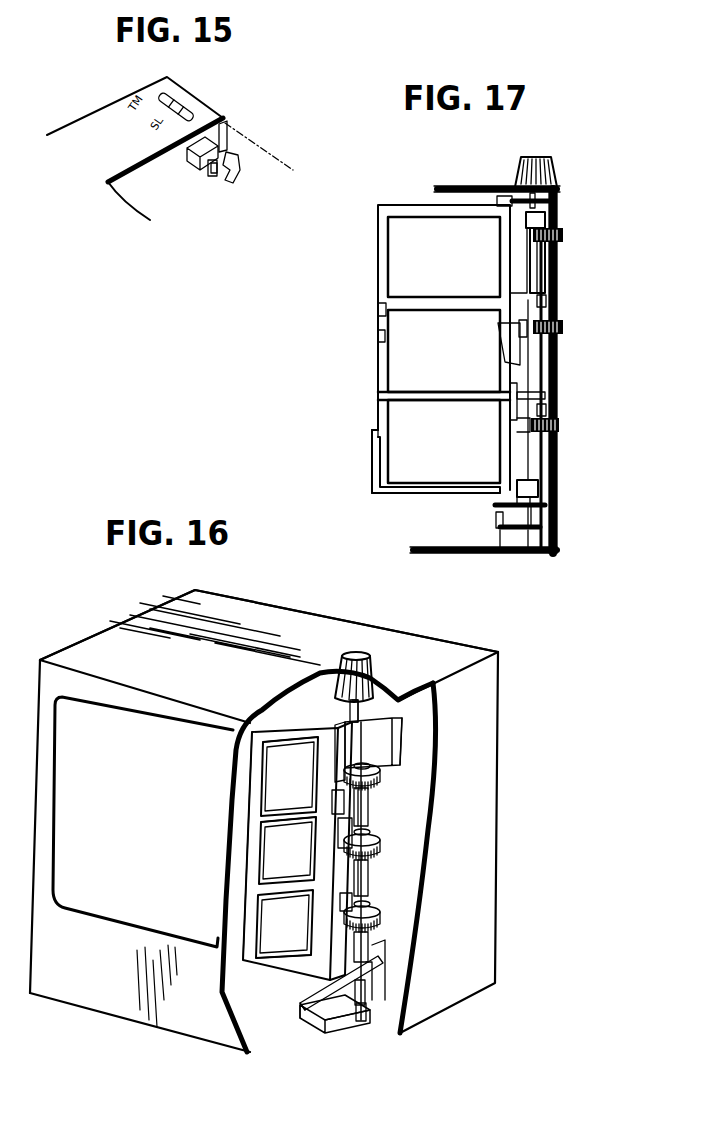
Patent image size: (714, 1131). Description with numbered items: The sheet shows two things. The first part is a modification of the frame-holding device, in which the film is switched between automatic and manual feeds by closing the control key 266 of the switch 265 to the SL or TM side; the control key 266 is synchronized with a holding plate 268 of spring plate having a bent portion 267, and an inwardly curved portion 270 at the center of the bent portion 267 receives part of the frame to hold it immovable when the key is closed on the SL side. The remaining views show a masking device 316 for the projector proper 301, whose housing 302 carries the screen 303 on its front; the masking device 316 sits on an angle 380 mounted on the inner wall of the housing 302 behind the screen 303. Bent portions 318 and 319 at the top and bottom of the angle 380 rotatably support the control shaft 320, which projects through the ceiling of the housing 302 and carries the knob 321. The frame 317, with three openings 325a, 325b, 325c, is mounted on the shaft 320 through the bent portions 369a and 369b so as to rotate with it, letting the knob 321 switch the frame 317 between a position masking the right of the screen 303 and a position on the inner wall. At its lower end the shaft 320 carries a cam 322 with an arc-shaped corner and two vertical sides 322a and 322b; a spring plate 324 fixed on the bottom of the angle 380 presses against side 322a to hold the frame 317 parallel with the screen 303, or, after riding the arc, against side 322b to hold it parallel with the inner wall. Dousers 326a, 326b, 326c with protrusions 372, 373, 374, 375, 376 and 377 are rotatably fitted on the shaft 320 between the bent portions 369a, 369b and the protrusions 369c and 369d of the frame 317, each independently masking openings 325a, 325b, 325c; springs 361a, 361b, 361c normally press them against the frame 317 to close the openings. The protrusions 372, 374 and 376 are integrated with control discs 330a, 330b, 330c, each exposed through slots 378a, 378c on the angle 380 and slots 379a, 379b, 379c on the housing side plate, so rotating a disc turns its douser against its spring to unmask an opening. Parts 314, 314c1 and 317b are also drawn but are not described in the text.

In FIG. 15, the switch 265 is at (187, 153).
In FIG. 15, the control key 266 is at (158, 97).
In FIG. 15, the bent portion 267 is at (208, 170).
In FIG. 15, the holding plate 268 is at (223, 145).
In FIG. 15, the inwardly curved portion 270 is at (238, 158).
In FIG. 16, the projector proper 301 is at (405, 610).
In FIG. 17, the housing 302 is at (437, 185).
In FIG. 16, the housing 302 is at (136, 612).
In FIG. 16, the screen 303 is at (103, 907).
In FIG. 17, the lever 314 is at (493, 520).
In FIG. 17, the lever arm 314c1 is at (520, 422).
In FIG. 17, the masking device 316 is at (380, 233).
In FIG. 16, the masking device 316 is at (258, 870).
In FIG. 17, the frame 317 is at (372, 466).
In FIG. 16, the frame 317 is at (262, 730).
In FIG. 17, the spring 317b is at (520, 338).
In FIG. 17, the bent portion 318 is at (505, 197).
In FIG. 16, the bent portion 318 is at (370, 705).
In FIG. 17, the bent portion 319 is at (547, 516).
In FIG. 16, the bent portion 319 is at (358, 1022).
In FIG. 17, the control shaft 320 is at (557, 191).
In FIG. 16, the control shaft 320 is at (367, 820).
In FIG. 17, the knob 321 is at (545, 157).
In FIG. 16, the knob 321 is at (385, 668).
In FIG. 17, the cam 322 is at (522, 541).
In FIG. 16, the cam 322 is at (345, 1025).
In FIG. 16, the side 322a is at (325, 1028).
In FIG. 16, the side 322b is at (300, 1020).
In FIG. 17, the spring plate 324 is at (495, 535).
In FIG. 16, the spring plate 324 is at (300, 1003).
In FIG. 17, the opening 325a is at (410, 212).
In FIG. 16, the opening 325a is at (283, 755).
In FIG. 17, the opening 325b is at (381, 341).
In FIG. 16, the opening 325b is at (262, 818).
In FIG. 17, the opening 325c is at (392, 480).
In FIG. 16, the opening 325c is at (290, 958).
In FIG. 17, the douser 326a is at (395, 258).
In FIG. 16, the douser 326a is at (350, 745).
In FIG. 17, the douser 326b is at (382, 360).
In FIG. 16, the douser 326b is at (258, 806).
In FIG. 17, the douser 326c is at (382, 425).
In FIG. 16, the douser 326c is at (278, 935).
In FIG. 17, the control disc 330a is at (561, 235).
In FIG. 16, the control disc 330a is at (380, 777).
In FIG. 17, the control disc 330b is at (565, 327).
In FIG. 16, the control disc 330b is at (380, 850).
In FIG. 17, the control disc 330c is at (562, 425).
In FIG. 16, the control disc 330c is at (380, 927).
In FIG. 16, the spring 361a is at (370, 802).
In FIG. 16, the spring 361b is at (352, 873).
In FIG. 16, the spring 361c is at (370, 980).
In FIG. 16, the bent portion 369a is at (343, 725).
In FIG. 16, the bent portion 369b is at (366, 1012).
In FIG. 17, the protrusion 369c is at (547, 296).
In FIG. 16, the protrusion 369c is at (372, 836).
In FIG. 16, the protrusion 369d is at (372, 912).
In FIG. 16, the protrusion 372 is at (382, 757).
In FIG. 17, the protrusion 373 is at (548, 268).
In FIG. 16, the protrusion 373 is at (358, 826).
In FIG. 17, the protrusion 374 is at (535, 318).
In FIG. 16, the protrusion 374 is at (340, 805).
In FIG. 17, the protrusion 375 is at (548, 385).
In FIG. 16, the protrusion 375 is at (375, 897).
In FIG. 16, the protrusion 376 is at (375, 962).
In FIG. 17, the protrusion 377 is at (545, 486).
In FIG. 16, the protrusion 377 is at (385, 1005).
In FIG. 17, the slot 378a is at (548, 262).
In FIG. 17, the slot 378c is at (548, 406).
In FIG. 17, the slot 379a is at (548, 222).
In FIG. 17, the slot 379b is at (548, 349).
In FIG. 17, the slot 379c is at (548, 446).
In FIG. 17, the angle 380 is at (548, 213).
In FIG. 16, the angle 380 is at (377, 735).